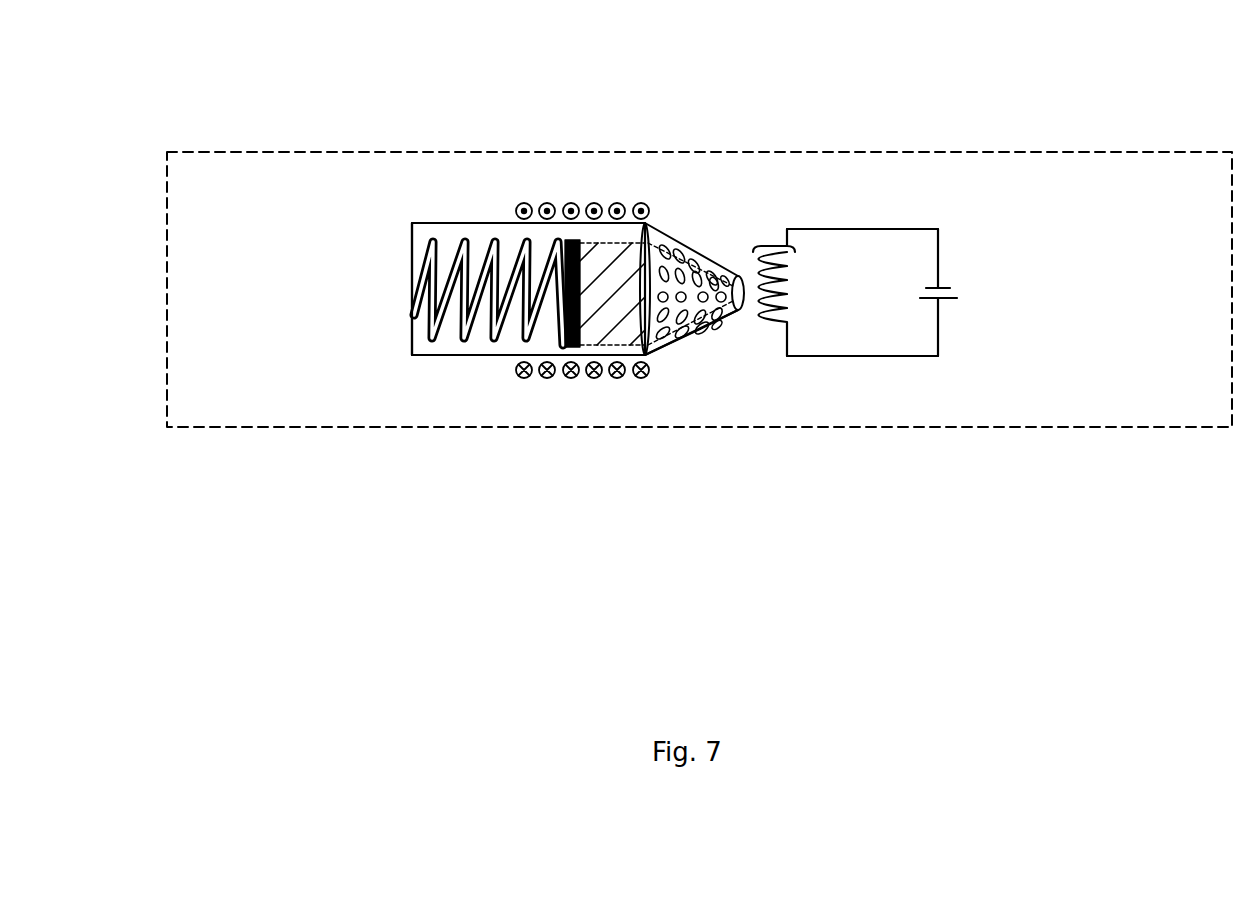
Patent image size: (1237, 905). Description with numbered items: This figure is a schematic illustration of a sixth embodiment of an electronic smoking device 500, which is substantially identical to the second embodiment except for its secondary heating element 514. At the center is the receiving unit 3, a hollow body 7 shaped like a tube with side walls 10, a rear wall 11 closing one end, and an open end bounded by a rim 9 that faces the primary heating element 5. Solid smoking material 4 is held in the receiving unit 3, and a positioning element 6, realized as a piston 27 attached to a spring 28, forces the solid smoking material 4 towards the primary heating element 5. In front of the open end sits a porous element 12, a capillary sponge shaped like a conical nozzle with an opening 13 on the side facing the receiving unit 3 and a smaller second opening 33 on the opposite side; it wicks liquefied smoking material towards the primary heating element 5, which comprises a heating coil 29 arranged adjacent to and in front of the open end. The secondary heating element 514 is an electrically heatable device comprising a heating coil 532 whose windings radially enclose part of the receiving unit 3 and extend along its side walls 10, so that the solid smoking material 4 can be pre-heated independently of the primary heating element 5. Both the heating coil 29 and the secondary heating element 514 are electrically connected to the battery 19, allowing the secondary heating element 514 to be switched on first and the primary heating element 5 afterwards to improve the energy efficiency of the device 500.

The electronic smoking device 500 is at (1035, 151).
The secondary heating element 514 is at (626, 166).
The positioning element 6 is at (482, 240).
The heating coil 532 is at (570, 204).
The hollow body 7 is at (452, 332).
The spring 28 is at (412, 265).
The rear wall 11 is at (412, 305).
The side walls 10 is at (425, 355).
The receiving unit 3 is at (482, 357).
The piston 27 is at (577, 241).
The solid smoking material 4 is at (622, 308).
The porous element 12 is at (700, 257).
The rim 9 is at (647, 225).
The opening 13 is at (658, 350).
The second opening 33 is at (738, 315).
The primary heating element 5 is at (773, 243).
The heating coil 29 is at (787, 320).
The battery 19 is at (945, 305).